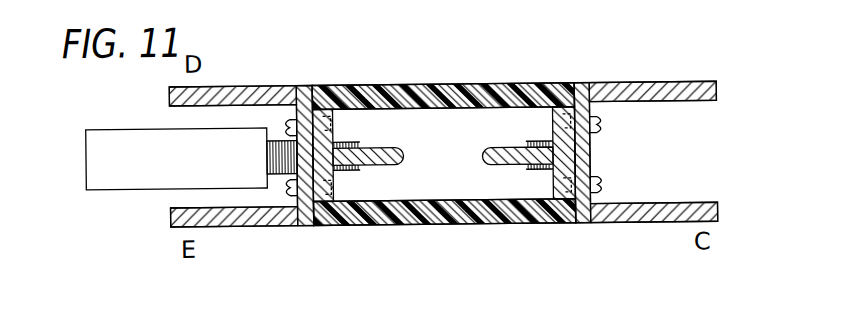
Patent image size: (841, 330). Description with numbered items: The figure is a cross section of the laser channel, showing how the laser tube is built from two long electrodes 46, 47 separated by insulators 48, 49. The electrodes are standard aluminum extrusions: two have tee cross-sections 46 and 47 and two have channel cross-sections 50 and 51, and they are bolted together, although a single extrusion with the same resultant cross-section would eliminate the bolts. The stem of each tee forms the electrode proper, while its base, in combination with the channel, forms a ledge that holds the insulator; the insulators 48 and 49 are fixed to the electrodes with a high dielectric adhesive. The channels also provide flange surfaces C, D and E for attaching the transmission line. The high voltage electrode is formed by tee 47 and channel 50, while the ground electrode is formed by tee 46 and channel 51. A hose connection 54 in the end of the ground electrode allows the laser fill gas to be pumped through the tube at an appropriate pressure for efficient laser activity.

The electrode 46 is at (381, 150).
The electrode 47 is at (484, 170).
The insulator 48 is at (458, 88).
The insulator 49 is at (446, 227).
The channel cross-section extrusion 50 is at (658, 87).
The channel cross-section extrusion 51 is at (255, 87).
The hose connection 54 is at (97, 134).